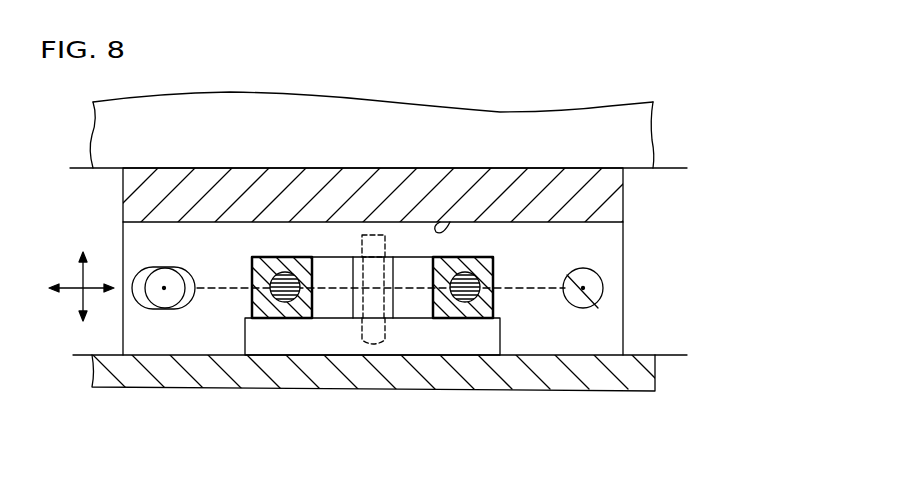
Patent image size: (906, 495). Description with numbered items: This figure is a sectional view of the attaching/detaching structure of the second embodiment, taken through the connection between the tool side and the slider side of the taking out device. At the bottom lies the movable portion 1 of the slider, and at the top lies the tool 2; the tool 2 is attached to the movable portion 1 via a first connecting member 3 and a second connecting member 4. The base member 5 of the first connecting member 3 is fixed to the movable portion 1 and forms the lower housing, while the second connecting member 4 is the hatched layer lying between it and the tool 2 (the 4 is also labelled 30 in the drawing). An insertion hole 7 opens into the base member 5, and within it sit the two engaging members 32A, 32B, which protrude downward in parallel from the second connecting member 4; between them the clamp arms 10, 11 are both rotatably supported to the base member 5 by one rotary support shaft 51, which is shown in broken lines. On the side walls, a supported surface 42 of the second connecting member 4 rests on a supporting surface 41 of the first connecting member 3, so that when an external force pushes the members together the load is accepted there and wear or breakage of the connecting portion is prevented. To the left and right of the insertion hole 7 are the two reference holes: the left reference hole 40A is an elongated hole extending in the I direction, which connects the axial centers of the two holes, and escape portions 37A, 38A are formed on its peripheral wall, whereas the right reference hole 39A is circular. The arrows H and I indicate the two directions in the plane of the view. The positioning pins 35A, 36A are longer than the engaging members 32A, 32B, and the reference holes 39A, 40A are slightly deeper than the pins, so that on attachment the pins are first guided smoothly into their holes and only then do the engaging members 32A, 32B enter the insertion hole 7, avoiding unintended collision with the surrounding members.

The movable portion 1 is at (640, 380).
The tool 2 is at (610, 132).
The first connecting member 3 is at (446, 288).
The base member 5 is at (608, 247).
The second connecting member 4 is at (439, 195).
The intermediate layer (alternative designation) 30 is at (610, 187).
The insertion hole 7 is at (323, 256).
The clamp arm 10 is at (333, 323).
The clamp arm 11 is at (408, 304).
The engaging member 32A is at (286, 320).
The engaging member 32B is at (448, 320).
The positioning pin 35A is at (598, 303).
The positioning pin 36A is at (149, 310).
The escape portion 37A is at (184, 273).
The escape portion 38A is at (148, 270).
The reference hole 39A is at (600, 281).
The reference hole 40A is at (158, 273).
The supporting surface 41 is at (519, 222).
The supported surface 42 is at (450, 222).
The rotary support shaft 51 is at (373, 332).
The height direction arrow H is at (78, 282).
The I direction I is at (77, 293).